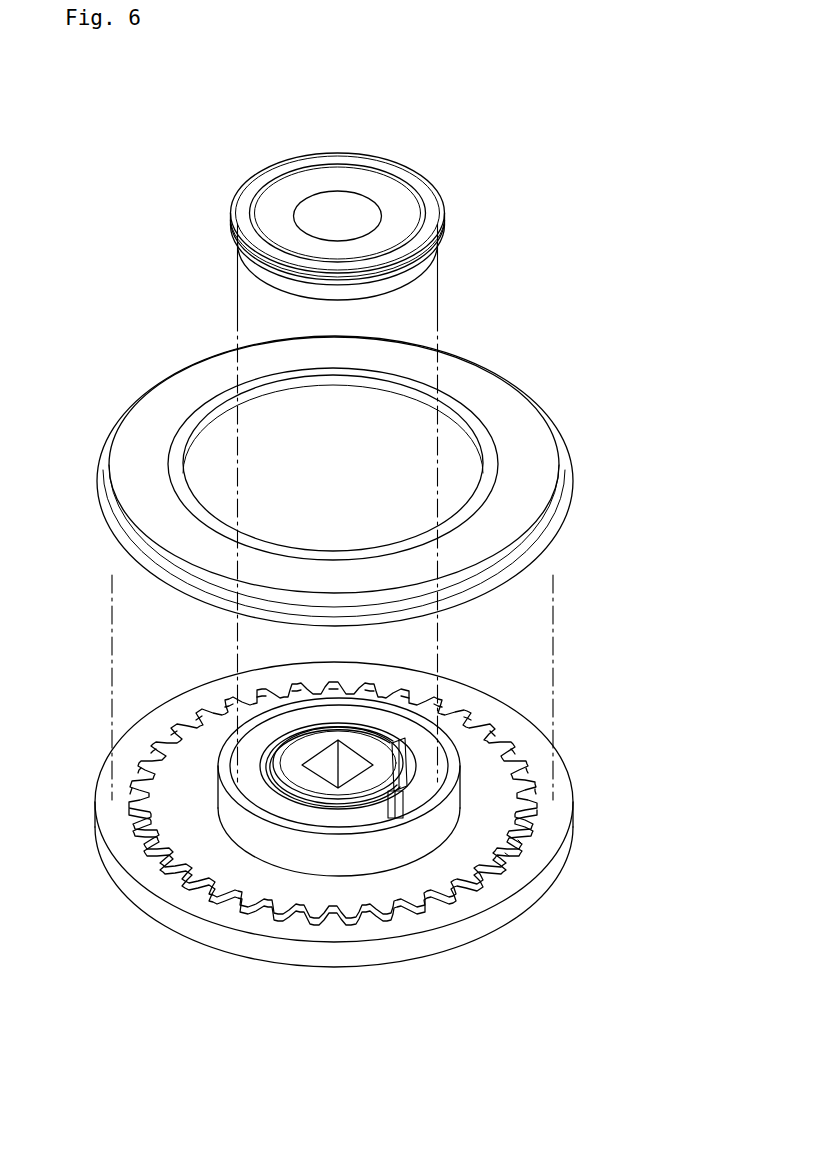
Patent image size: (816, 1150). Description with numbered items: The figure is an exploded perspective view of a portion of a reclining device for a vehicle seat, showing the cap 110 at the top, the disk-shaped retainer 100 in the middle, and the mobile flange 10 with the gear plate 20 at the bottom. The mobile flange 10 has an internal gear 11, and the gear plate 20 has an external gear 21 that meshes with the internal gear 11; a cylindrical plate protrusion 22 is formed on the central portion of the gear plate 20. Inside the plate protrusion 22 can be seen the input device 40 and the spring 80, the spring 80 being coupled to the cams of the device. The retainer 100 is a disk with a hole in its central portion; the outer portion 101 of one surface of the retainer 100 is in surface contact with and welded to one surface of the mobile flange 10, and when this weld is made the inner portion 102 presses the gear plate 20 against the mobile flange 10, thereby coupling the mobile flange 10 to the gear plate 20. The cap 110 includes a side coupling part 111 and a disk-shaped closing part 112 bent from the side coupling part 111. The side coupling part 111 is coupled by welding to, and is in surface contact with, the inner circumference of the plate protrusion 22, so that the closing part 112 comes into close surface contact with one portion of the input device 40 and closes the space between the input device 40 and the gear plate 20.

The mobile flange 10 is at (374, 869).
The internal gear 11 is at (512, 838).
The gear plate 20 is at (349, 848).
The external gear 21 is at (506, 858).
The plate protrusion 22 is at (372, 858).
The input device 40 is at (300, 777).
The spring 80 is at (318, 808).
The retainer 100 is at (377, 450).
The outer portion 101 is at (565, 472).
The inner portion 102 is at (190, 430).
The cap 110 is at (276, 188).
The side coupling part 111 is at (237, 253).
The closing part 112 is at (382, 194).